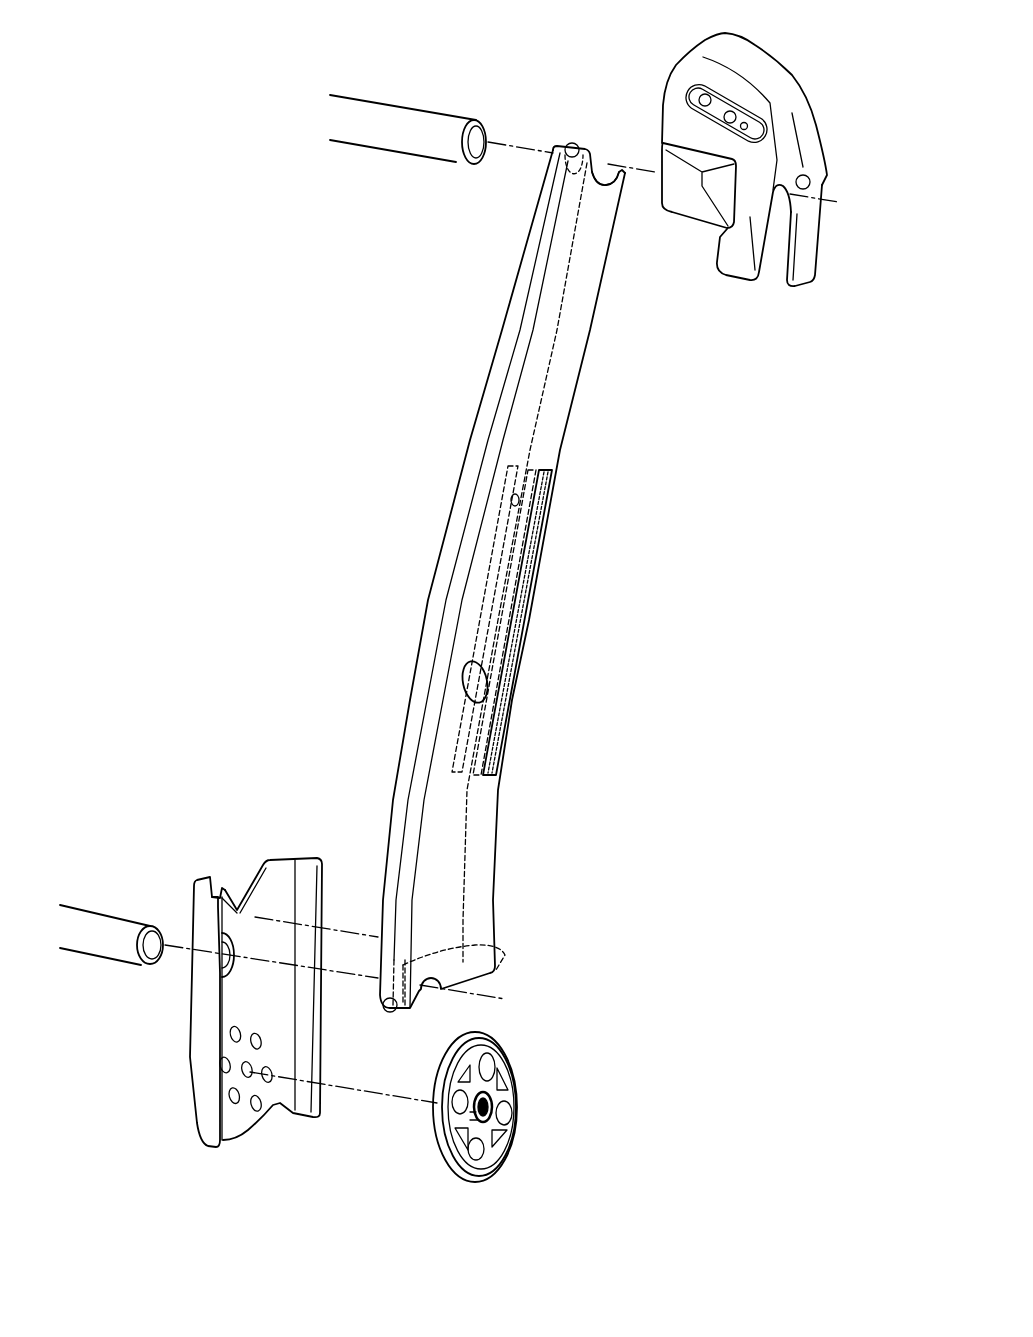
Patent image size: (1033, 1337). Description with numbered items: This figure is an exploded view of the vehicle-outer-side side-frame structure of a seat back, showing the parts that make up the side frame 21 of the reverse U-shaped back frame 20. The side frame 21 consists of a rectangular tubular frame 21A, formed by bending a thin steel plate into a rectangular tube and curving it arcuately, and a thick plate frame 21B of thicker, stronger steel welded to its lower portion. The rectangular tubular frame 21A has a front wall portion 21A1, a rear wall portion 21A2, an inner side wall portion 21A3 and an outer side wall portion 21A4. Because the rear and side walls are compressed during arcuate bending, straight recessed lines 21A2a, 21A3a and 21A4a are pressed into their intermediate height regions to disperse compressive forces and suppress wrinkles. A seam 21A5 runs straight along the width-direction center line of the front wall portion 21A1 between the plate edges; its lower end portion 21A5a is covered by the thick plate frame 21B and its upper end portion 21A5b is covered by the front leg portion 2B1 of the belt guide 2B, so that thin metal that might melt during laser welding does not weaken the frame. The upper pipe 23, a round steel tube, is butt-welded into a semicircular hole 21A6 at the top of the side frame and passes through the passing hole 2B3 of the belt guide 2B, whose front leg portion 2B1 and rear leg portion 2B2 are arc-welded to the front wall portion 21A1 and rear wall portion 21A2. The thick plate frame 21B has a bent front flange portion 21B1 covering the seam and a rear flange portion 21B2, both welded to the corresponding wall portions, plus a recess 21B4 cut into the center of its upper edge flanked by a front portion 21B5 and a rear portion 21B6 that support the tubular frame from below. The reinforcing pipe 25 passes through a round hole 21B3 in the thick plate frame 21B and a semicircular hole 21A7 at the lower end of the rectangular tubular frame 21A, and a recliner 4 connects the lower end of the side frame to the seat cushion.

The back frame 20 is at (157, 157).
The side frame 21 is at (382, 327).
The rectangular tubular frame 21A is at (535, 247).
The front wall portion 21A1 is at (495, 380).
The rear wall portion 21A2 is at (568, 362).
The recessed line 21A2a is at (512, 588).
The inner side wall portion 21A3 is at (520, 293).
The recessed line 21A3a is at (500, 542).
The outer side wall portion 21A4 is at (572, 333).
The recessed line 21A4a is at (507, 643).
The seam 21A5 is at (487, 438).
The lower end portion of seam 21A5a is at (390, 1013).
The upper end portion of seam 21A5b is at (572, 144).
The semicircular hole 21A6 is at (605, 168).
The semicircular hole 21A7 is at (507, 946).
The thick plate frame 21B is at (305, 855).
The front flange portion 21B1 is at (205, 923).
The rear flange portion 21B2 is at (310, 898).
The round hole 21B3 is at (232, 957).
The recess 21B4 is at (247, 897).
The front portion 21B5 is at (220, 888).
The rear portion 21B6 is at (285, 878).
The upper pipe 23 is at (395, 132).
The reinforcing pipe 25 is at (100, 940).
The belt guide 2B is at (683, 123).
The front leg portion 2B1 is at (740, 260).
The rear leg portion 2B2 is at (803, 283).
The passing hole 2B3 is at (805, 178).
The recliner 4 is at (518, 1078).